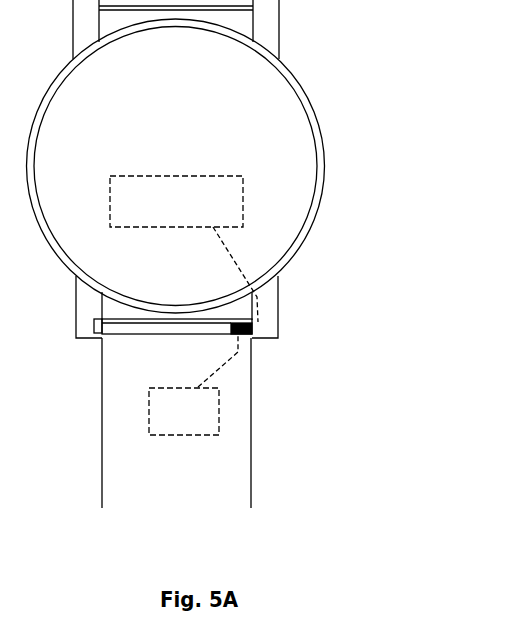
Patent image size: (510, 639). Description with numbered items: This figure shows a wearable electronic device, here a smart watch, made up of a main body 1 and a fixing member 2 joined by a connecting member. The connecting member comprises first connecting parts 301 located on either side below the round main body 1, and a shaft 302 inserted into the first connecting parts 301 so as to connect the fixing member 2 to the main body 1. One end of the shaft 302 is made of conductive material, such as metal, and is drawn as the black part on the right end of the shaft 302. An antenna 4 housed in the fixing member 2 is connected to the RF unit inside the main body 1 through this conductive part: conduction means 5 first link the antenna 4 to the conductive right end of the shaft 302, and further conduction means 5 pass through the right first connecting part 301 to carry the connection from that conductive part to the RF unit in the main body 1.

The main body 1 is at (326, 160).
The fixing member 2 is at (250, 447).
The first connecting part 301 is at (75, 317).
The shaft 302 is at (104, 335).
The antenna 4 is at (220, 417).
The conduction means 5 is at (228, 297).